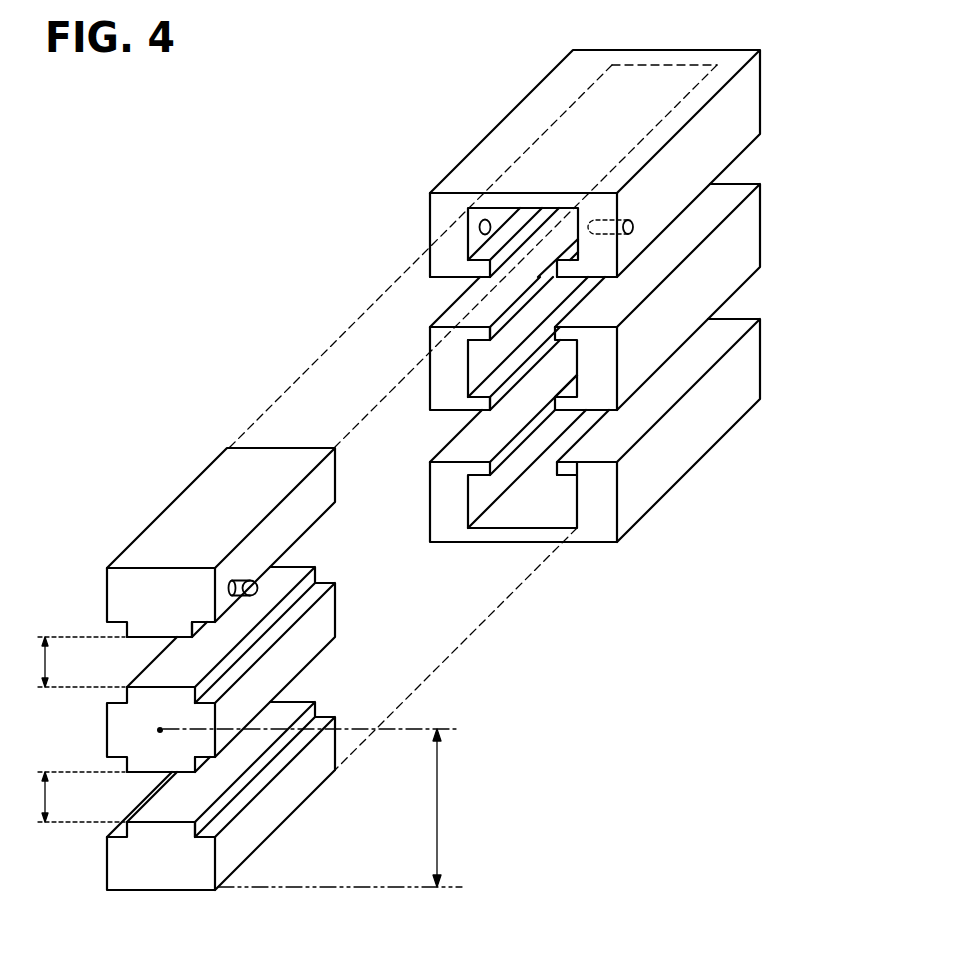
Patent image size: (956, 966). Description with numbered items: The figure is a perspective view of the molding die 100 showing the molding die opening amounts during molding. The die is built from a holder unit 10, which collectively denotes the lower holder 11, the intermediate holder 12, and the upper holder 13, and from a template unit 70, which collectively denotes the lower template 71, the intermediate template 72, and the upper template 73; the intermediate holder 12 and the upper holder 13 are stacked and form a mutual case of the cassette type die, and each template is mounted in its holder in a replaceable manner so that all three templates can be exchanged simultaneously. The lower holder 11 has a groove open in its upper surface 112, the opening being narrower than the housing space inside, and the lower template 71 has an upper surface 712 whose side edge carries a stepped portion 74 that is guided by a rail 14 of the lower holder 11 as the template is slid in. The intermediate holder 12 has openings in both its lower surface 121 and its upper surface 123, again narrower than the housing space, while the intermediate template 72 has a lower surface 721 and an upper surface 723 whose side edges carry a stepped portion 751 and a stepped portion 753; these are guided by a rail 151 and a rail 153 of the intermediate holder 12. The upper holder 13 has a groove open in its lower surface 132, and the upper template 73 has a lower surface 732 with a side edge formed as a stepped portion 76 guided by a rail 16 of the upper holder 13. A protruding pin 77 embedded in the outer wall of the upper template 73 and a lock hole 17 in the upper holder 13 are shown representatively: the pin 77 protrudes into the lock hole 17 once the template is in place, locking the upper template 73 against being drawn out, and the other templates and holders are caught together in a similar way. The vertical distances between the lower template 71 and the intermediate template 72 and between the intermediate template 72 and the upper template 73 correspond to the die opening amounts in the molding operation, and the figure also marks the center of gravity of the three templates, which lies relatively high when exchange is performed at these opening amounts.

The molding die 100 is at (388, 100).
The holder unit 10 is at (434, 153).
The lower holder 11 is at (597, 532).
The intermediate holder 12 is at (650, 345).
The upper holder 13 is at (517, 123).
The rail 14 is at (567, 477).
The rail 16 is at (482, 259).
The lock hole 17 is at (628, 221).
The upper surface 112 is at (467, 458).
The lower surface 121 is at (598, 411).
The upper surface 123 is at (598, 324).
The lower surface 132 is at (443, 277).
The rail 151 is at (483, 392).
The rail 153 is at (470, 358).
The template unit 70 is at (133, 464).
The lower template 71 is at (123, 862).
The intermediate template 72 is at (122, 729).
The upper template 73 is at (121, 594).
The stepped portion 74 is at (222, 813).
The stepped portion 76 is at (203, 631).
The protruding pin 77 is at (240, 582).
The upper surface 712 is at (160, 814).
The lower surface 721 is at (158, 773).
The upper surface 723 is at (181, 685).
The lower surface 732 is at (165, 638).
The stepped portion 751 is at (199, 757).
The stepped portion 753 is at (213, 695).